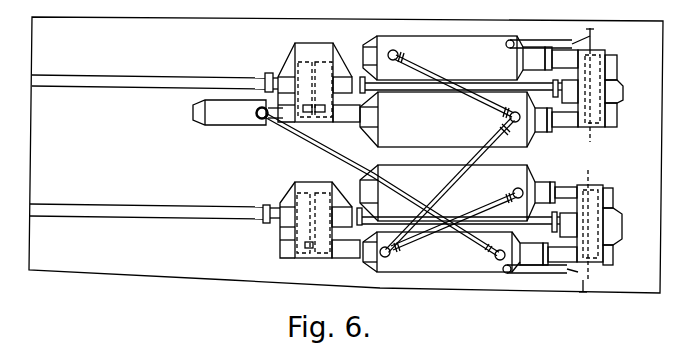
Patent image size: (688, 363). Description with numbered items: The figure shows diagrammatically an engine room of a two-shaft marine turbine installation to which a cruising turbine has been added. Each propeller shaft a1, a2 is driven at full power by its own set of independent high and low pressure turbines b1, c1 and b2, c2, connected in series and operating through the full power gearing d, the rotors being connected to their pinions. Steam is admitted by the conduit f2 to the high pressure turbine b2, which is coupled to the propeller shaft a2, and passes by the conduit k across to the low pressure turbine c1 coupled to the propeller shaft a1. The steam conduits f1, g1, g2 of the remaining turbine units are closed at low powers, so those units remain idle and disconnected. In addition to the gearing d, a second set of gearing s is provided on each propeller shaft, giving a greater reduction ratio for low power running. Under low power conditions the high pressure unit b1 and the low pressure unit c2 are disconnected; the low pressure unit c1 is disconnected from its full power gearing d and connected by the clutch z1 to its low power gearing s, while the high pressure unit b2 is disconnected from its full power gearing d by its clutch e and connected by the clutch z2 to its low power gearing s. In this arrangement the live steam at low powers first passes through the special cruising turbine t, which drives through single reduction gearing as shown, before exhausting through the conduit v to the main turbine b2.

The propeller shaft a1 is at (101, 79).
The propeller shaft a2 is at (91, 208).
The high pressure turbine b1 is at (470, 58).
The high pressure turbine b2 is at (470, 252).
The low pressure turbine c1 is at (469, 119).
The low pressure turbine c2 is at (455, 193).
The gearing d is at (600, 165).
The clutch e is at (563, 192).
The steam conduit f1 is at (556, 36).
The steam conduit f2 is at (548, 278).
The steam conduit g1 is at (450, 88).
The steam conduit g2 is at (399, 247).
The steam conduit k is at (497, 140).
The second set of gearing s is at (315, 100).
The cruising turbine t is at (229, 121).
The conduit v is at (288, 128).
The clutch z1 is at (352, 118).
The clutch z2 is at (340, 254).